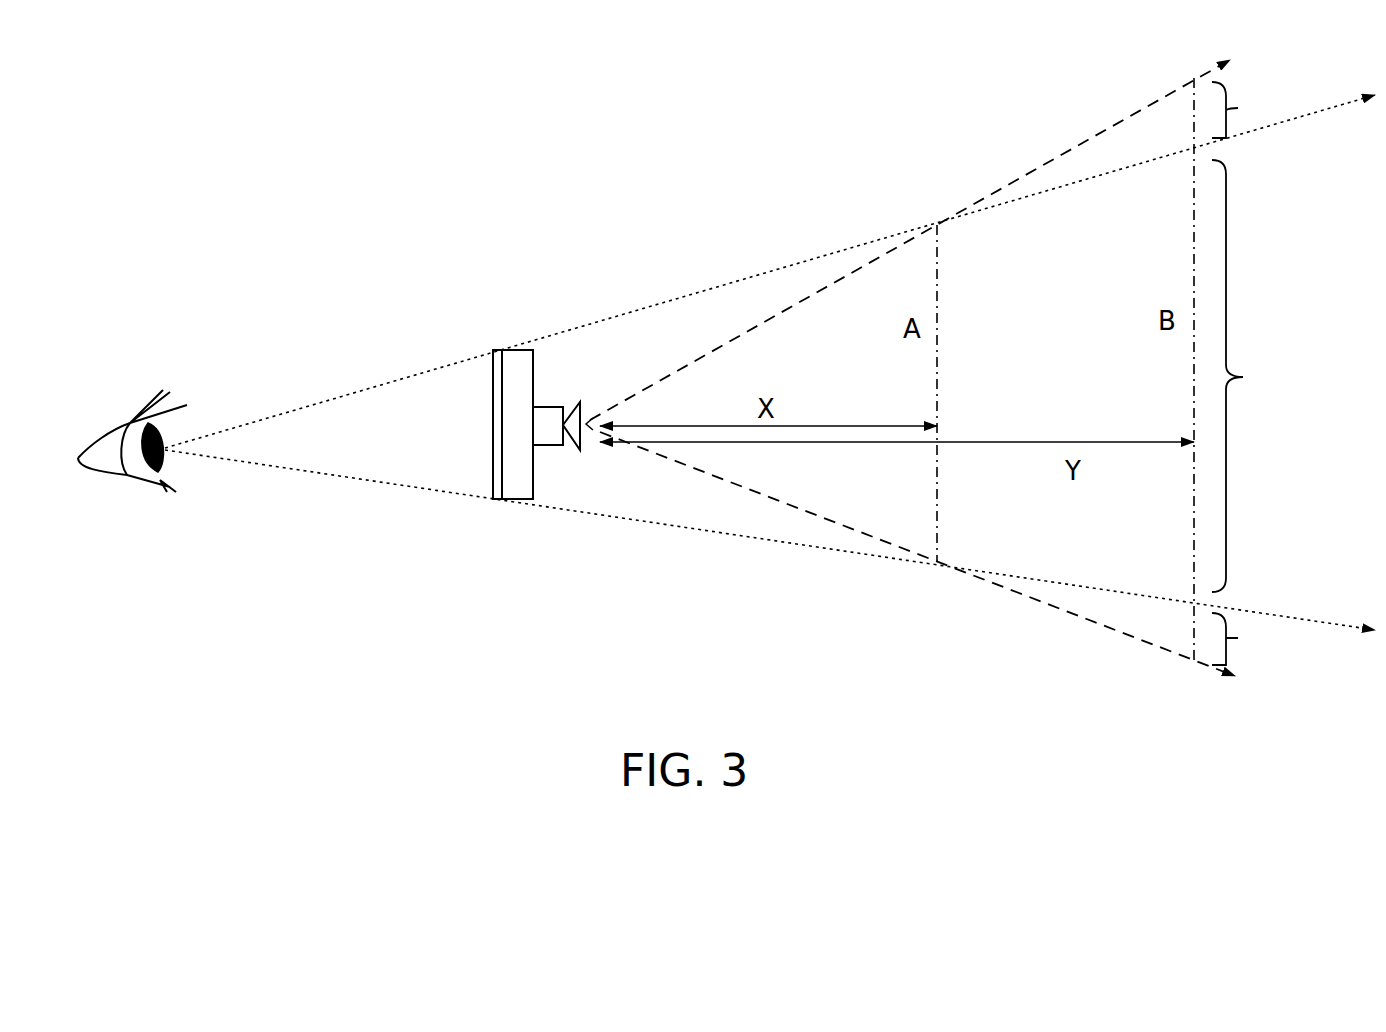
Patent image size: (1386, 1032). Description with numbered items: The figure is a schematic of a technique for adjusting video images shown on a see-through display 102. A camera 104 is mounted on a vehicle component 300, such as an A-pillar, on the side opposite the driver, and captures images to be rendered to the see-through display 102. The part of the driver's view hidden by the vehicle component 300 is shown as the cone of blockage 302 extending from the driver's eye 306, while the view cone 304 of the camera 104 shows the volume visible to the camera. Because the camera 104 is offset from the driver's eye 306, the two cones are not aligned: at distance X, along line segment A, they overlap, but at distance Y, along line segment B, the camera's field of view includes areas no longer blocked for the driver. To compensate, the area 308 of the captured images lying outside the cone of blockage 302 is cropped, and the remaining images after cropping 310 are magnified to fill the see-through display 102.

The see-through display 102 is at (495, 465).
The camera 104 is at (545, 445).
The vehicle component 300 is at (517, 434).
The cone of blockage 302 is at (319, 402).
The view cone of the camera 304 is at (745, 330).
The driver's eye 306 is at (123, 478).
The cropped area of the captured images 308 is at (1238, 108).
The remaining images after cropping 310 is at (1262, 376).